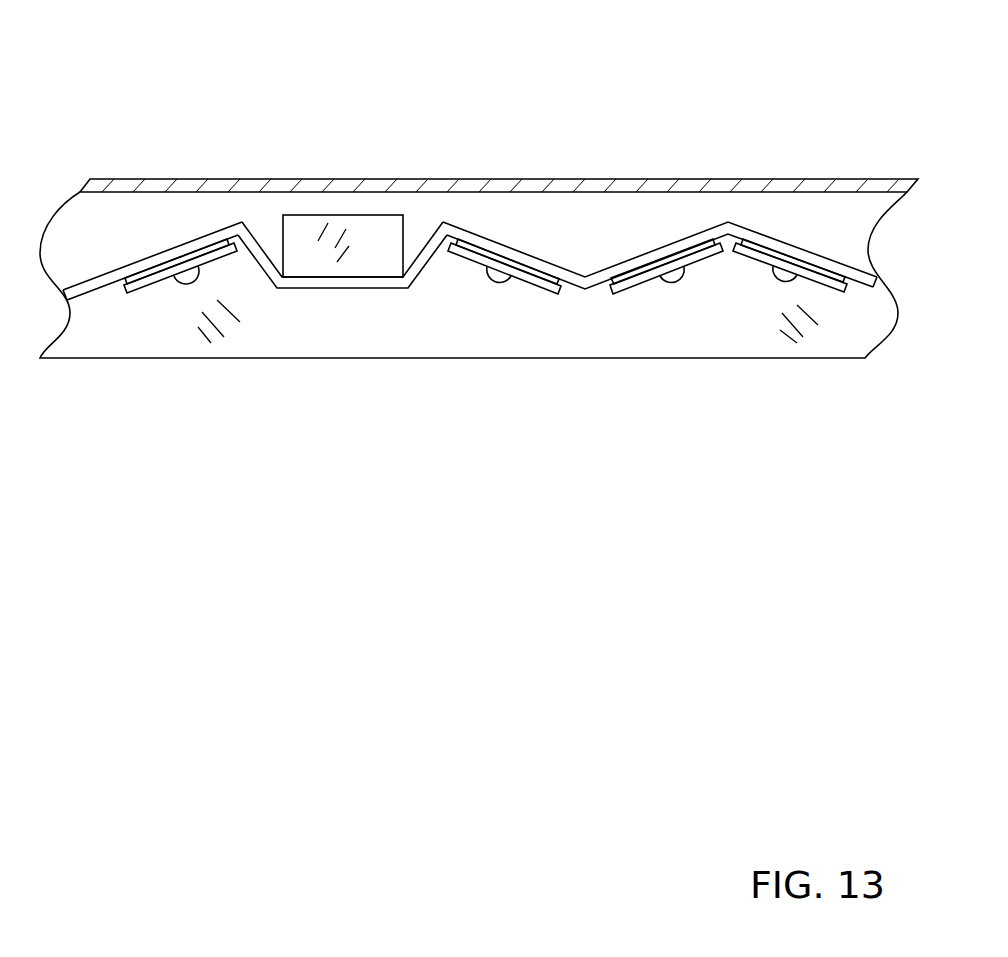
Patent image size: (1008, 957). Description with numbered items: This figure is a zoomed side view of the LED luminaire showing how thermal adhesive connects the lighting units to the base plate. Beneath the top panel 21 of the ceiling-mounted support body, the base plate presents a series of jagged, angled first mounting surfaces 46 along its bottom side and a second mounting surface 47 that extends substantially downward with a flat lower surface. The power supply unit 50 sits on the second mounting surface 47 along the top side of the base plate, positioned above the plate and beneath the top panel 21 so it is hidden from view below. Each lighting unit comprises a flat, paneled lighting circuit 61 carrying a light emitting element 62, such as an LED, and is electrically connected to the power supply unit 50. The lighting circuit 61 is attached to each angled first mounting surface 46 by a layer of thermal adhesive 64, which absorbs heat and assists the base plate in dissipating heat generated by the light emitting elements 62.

The top panel 21 is at (397, 180).
The first mounting surfaces 46 is at (573, 287).
The second mounting surface 47 is at (425, 242).
The power supply unit 50 is at (315, 240).
The lighting circuit 61 is at (540, 293).
The light emitting element 62 is at (495, 293).
The thermal adhesive 64 is at (575, 293).